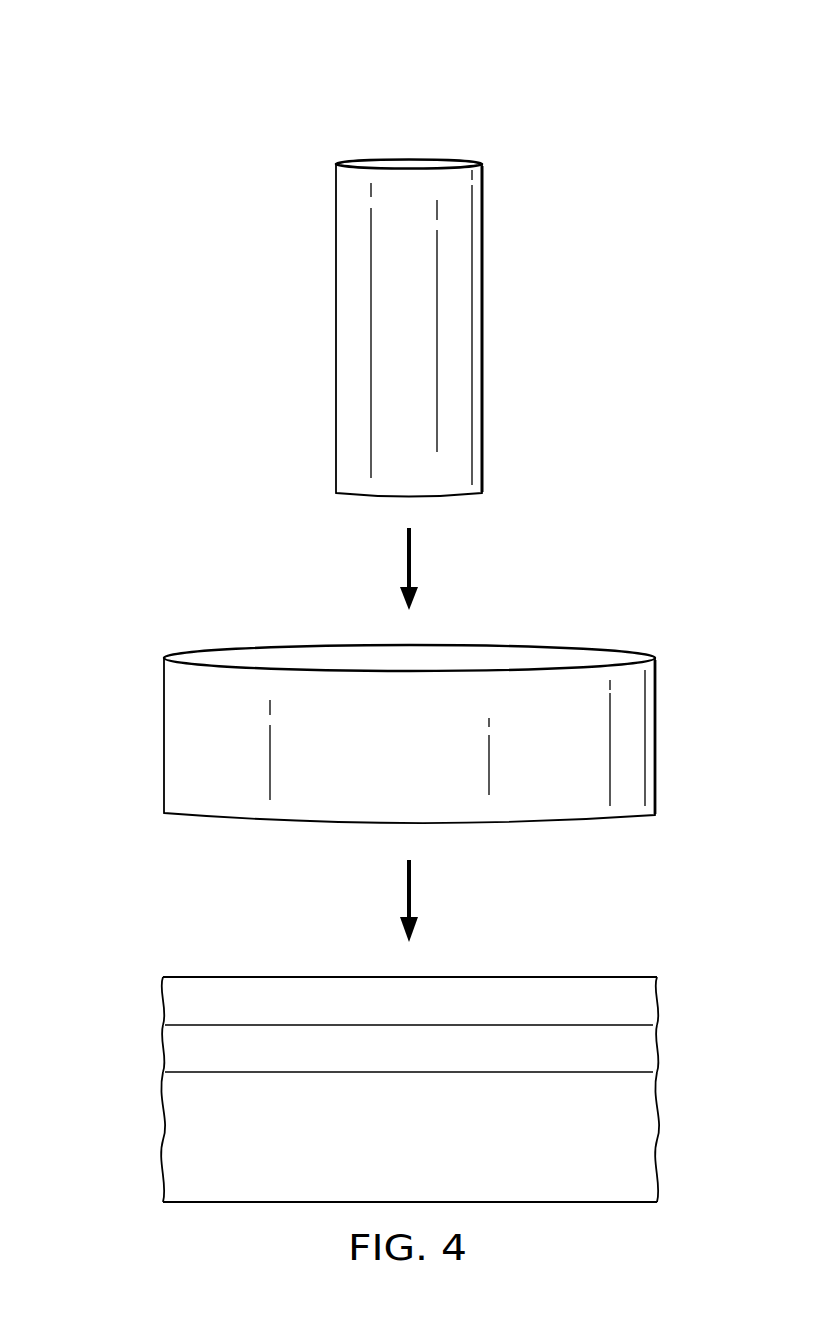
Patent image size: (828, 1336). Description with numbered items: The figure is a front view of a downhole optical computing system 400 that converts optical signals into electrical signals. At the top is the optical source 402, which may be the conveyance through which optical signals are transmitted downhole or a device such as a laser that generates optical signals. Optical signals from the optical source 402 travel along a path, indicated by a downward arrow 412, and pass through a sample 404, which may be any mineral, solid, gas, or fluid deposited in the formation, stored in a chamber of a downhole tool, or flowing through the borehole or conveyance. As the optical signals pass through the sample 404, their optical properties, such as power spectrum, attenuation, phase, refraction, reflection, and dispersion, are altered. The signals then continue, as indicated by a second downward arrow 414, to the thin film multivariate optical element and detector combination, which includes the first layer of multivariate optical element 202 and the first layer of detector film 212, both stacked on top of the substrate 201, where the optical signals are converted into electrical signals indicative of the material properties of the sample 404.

The downhole optical computing system 400 is at (311, 70).
The optical source 402 is at (336, 328).
The deposition step arrow 412 is at (406, 565).
The sample 404 is at (164, 737).
The deposition step arrow 414 is at (406, 895).
The first layer of multivariate optical element 202 is at (168, 998).
The first layer of detector film 212 is at (168, 1046).
The substrate 201 is at (168, 1139).